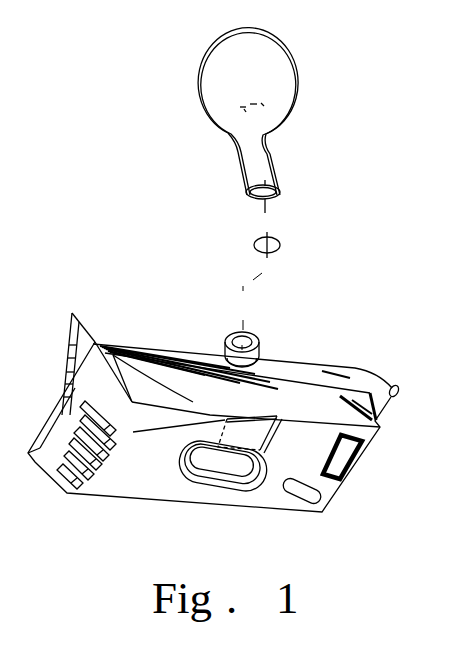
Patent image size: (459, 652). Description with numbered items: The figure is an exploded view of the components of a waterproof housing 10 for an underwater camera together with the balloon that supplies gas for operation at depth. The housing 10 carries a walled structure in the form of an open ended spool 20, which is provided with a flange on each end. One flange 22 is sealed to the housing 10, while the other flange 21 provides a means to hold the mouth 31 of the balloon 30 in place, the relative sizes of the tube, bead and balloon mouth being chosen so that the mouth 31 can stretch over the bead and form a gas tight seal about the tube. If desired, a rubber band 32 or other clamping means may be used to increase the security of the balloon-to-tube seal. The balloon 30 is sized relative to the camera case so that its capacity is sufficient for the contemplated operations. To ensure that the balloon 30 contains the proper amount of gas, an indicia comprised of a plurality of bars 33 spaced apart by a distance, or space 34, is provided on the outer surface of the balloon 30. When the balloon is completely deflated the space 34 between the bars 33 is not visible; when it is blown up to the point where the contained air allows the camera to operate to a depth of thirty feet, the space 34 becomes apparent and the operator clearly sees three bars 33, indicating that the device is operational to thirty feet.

The waterproof housing 10 is at (83, 327).
The open ended spool 20 is at (260, 342).
The flange 21 is at (229, 333).
The flange 22 is at (228, 352).
The balloon 30 is at (280, 44).
The mouth 31 is at (253, 203).
The rubber band 32 is at (281, 245).
The bars 33 is at (245, 108).
The space 34 is at (245, 111).